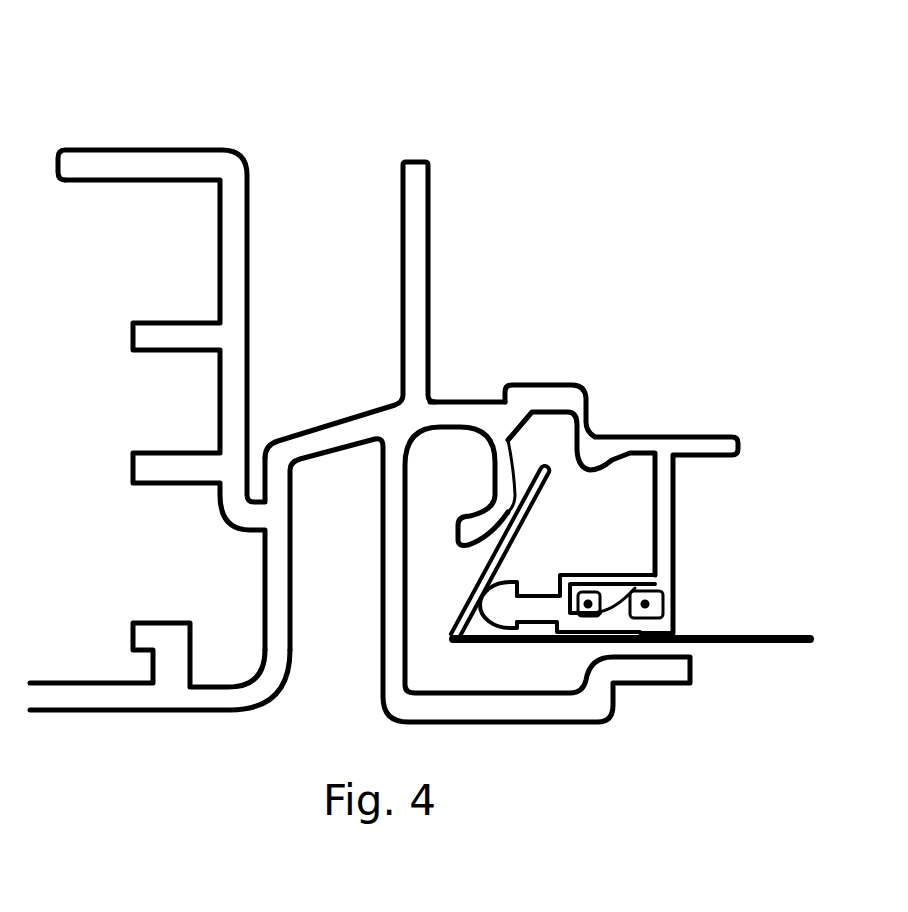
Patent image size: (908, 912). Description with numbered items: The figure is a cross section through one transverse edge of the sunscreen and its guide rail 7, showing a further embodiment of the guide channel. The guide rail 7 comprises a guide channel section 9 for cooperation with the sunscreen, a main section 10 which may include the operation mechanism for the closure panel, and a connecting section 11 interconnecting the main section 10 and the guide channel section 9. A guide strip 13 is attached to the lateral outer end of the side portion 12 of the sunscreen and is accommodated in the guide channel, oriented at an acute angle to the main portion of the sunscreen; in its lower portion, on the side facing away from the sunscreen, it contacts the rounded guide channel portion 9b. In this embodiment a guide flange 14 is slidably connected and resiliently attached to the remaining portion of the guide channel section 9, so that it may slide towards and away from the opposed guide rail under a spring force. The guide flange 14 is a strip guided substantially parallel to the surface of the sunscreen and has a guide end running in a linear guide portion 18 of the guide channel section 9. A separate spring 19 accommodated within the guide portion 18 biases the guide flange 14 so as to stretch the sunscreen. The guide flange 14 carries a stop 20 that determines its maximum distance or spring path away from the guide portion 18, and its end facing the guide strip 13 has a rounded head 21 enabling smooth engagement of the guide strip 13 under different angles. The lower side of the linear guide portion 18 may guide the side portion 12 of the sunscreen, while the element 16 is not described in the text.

The guide rail 7 is at (204, 114).
The guide channel section 9 is at (468, 389).
The rounded guide channel portion 9b is at (508, 440).
The main section 10 is at (117, 721).
The connecting section 11 is at (353, 435).
The side portion of the sunscreen 12 is at (793, 638).
The guide strip 13 is at (550, 468).
The guide flange 14 is at (546, 638).
The holding profile 16 is at (683, 447).
The linear guide portion 18 is at (668, 637).
The spring 19 is at (622, 585).
The stop 20 is at (585, 614).
The rounded head 21 is at (500, 615).